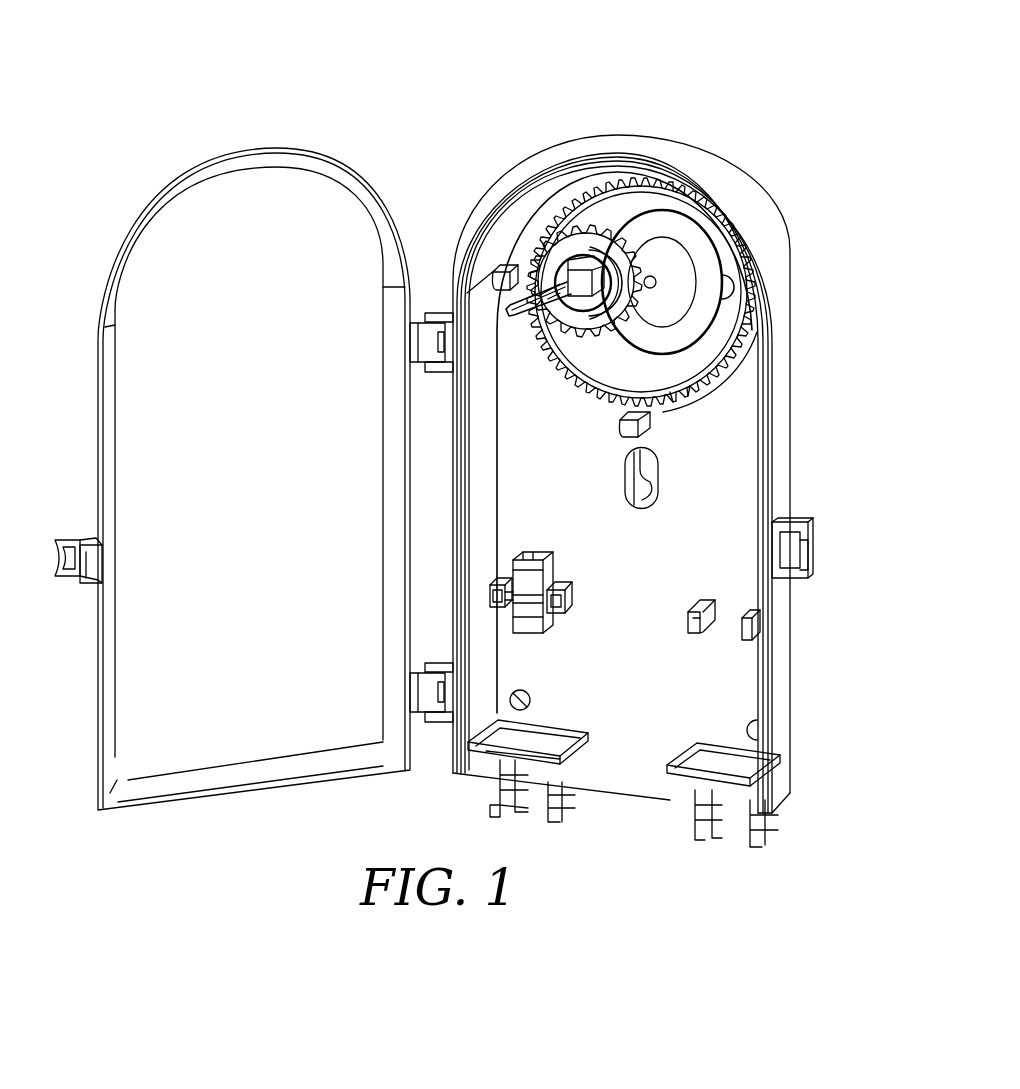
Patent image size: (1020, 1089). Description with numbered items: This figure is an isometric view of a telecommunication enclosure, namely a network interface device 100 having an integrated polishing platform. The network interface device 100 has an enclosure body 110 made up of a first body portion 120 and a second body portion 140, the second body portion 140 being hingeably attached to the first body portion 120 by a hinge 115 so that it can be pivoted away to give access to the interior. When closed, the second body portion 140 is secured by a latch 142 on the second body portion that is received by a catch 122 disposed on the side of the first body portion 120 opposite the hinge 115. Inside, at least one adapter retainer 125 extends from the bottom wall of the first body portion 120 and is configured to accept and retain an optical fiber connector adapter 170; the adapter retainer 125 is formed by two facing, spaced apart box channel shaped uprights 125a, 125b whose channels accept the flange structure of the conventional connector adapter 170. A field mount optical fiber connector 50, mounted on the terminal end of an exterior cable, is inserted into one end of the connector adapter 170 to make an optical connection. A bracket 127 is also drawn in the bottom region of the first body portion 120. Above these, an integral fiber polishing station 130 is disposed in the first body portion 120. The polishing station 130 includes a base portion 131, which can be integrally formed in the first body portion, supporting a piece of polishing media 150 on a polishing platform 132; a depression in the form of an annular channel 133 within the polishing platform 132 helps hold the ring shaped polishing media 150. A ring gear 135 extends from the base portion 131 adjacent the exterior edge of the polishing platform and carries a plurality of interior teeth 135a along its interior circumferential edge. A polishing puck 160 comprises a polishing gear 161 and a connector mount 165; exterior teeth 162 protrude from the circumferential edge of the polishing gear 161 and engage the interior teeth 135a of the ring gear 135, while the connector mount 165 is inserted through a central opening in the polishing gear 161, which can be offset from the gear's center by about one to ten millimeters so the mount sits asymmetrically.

The network interface device 100 is at (265, 50).
The enclosure body 110 is at (752, 103).
The hinge 115 is at (428, 313).
The first body portion 120 is at (786, 484).
The catch 122 is at (814, 548).
The adapter retainer 125 is at (574, 598).
The box channel shaped upright 125a is at (490, 597).
The box channel shaped upright 125b is at (506, 605).
The mounting bracket 127 is at (538, 745).
The fiber polishing station 130 is at (742, 297).
The base portion 131 is at (735, 328).
The polishing platform 132 is at (703, 355).
The annular channel 133 is at (695, 215).
The ring gear 135 is at (707, 397).
The interior teeth 135a is at (693, 377).
The second body portion 140 is at (98, 668).
The latch 142 is at (57, 540).
The polishing media 150 is at (700, 250).
The polishing puck 160 is at (570, 368).
The polishing gear 161 is at (560, 237).
The exterior teeth 162 is at (630, 257).
The connector mount 165 is at (637, 270).
The optical fiber connector adapter 170 is at (528, 633).
The field mount optical fiber connector 50 is at (547, 258).